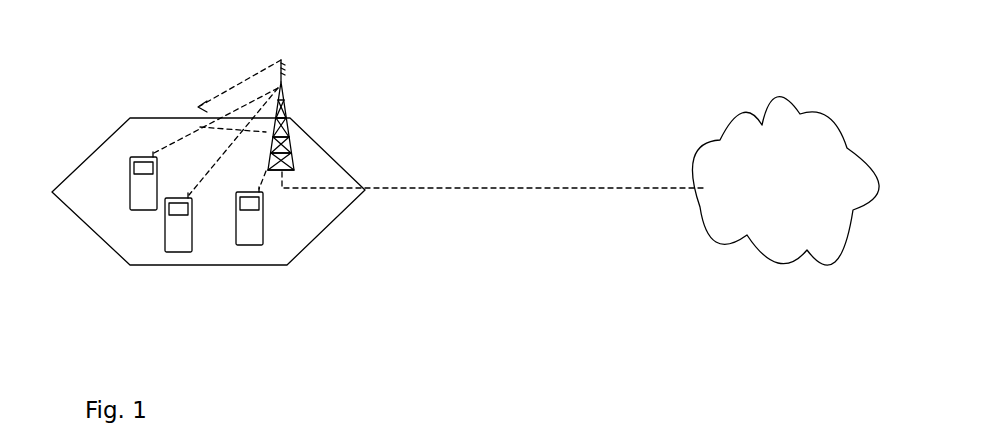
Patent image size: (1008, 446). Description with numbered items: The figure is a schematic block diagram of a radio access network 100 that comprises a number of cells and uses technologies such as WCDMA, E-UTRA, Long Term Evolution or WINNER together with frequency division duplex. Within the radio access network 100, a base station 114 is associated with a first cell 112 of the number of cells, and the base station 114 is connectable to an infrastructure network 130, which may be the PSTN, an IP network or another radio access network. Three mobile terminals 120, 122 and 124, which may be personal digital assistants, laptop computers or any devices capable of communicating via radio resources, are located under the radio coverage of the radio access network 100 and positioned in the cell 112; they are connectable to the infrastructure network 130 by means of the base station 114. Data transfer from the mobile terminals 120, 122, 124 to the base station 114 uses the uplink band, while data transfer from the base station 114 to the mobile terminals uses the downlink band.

The radio access network 100 is at (140, 272).
The first cell 112 is at (295, 228).
The base station 114 is at (293, 127).
The mobile terminal 120 is at (130, 184).
The mobile terminal 122 is at (165, 237).
The mobile terminal 124 is at (243, 238).
The infrastructure network 130 is at (732, 234).